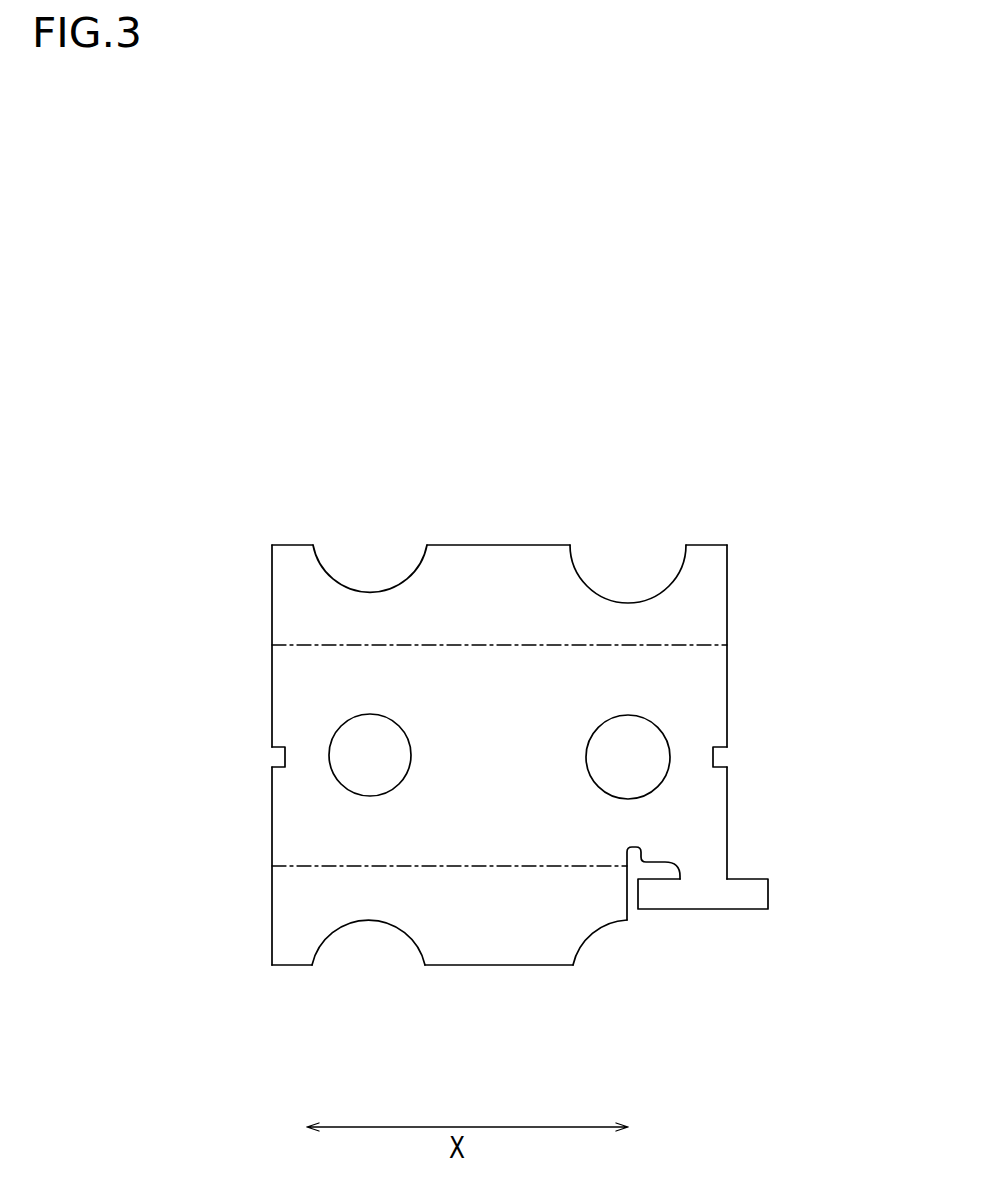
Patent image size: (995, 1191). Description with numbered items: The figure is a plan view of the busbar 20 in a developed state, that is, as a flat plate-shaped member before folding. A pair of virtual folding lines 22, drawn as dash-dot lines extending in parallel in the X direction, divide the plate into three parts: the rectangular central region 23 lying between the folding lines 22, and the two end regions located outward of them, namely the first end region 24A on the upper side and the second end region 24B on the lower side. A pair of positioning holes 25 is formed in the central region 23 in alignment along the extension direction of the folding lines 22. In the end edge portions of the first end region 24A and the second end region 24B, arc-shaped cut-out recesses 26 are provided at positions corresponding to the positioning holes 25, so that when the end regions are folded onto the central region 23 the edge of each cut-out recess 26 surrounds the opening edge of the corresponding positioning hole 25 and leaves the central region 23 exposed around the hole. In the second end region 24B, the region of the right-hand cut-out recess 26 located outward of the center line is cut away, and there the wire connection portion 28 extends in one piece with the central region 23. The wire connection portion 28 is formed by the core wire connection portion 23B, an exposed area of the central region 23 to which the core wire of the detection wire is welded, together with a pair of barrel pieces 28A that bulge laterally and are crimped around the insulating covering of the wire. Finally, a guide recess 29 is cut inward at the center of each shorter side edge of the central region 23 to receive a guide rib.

The busbar 20 is at (764, 465).
The folding lines 22 is at (688, 645).
The central region 23 is at (298, 695).
The core wire connection portion 23B is at (710, 818).
The first end region 24A is at (293, 586).
The second end region 24B is at (290, 933).
The positioning holes 25 is at (590, 770).
The cut-out recesses 26 is at (380, 590).
The wire connection portion 28 is at (833, 805).
The barrel pieces 28A is at (653, 895).
The guide recess 29 is at (281, 755).